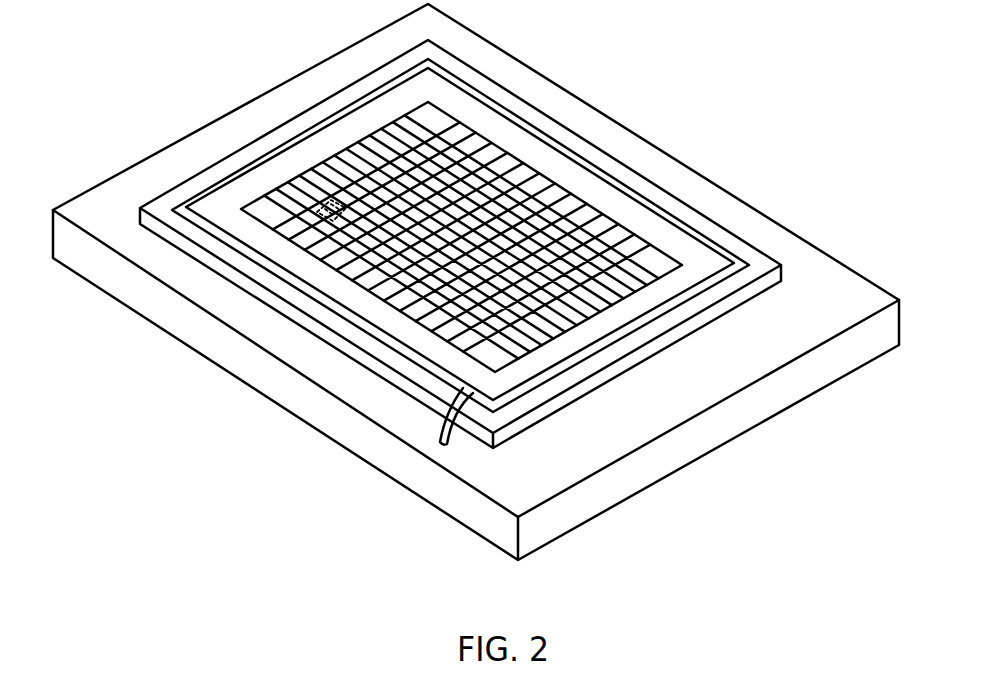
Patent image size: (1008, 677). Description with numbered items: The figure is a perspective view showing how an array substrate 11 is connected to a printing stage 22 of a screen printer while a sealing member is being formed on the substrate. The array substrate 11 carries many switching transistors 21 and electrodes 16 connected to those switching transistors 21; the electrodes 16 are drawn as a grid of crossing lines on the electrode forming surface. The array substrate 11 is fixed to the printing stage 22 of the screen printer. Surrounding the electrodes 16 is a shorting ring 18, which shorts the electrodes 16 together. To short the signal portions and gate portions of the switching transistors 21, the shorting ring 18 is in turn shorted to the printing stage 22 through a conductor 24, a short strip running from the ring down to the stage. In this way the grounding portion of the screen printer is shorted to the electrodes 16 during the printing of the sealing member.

The array substrate 11 is at (795, 266).
The electrodes 16 is at (392, 347).
The shorting ring 18 is at (701, 238).
The switching transistors 21 is at (320, 208).
The printing stage 22 is at (783, 414).
The conductor 24 is at (436, 441).